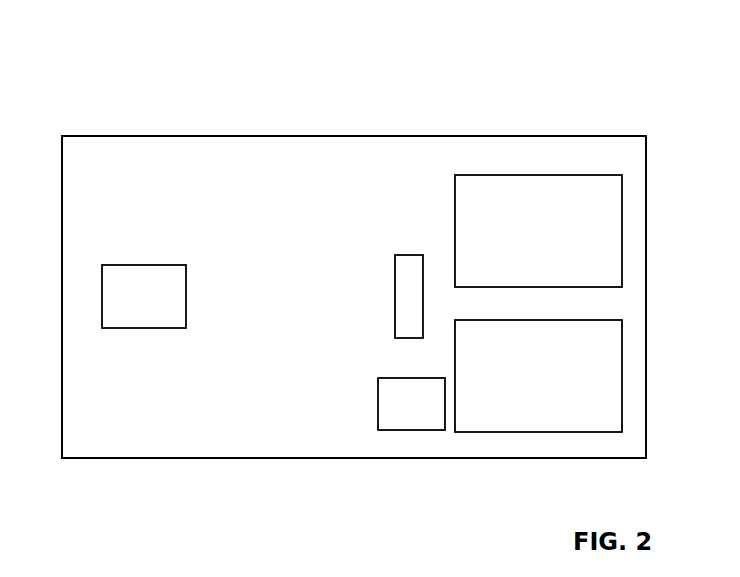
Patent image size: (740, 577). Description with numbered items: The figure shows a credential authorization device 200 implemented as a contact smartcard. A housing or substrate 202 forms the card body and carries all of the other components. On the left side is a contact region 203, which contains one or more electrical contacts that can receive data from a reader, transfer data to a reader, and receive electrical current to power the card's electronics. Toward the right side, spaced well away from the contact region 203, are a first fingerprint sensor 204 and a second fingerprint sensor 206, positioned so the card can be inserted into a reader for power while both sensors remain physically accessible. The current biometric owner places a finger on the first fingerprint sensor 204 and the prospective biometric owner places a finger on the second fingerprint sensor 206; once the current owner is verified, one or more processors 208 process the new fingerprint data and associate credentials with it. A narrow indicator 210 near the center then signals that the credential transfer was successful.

The credential authorization device 200 is at (97, 105).
The housing or substrate 202 is at (354, 297).
The contact region 203 is at (144, 296).
The first fingerprint sensor 204 is at (538, 231).
The second fingerprint sensor 206 is at (538, 376).
The one or more processors 208 is at (411, 404).
The indicator 210 is at (410, 277).